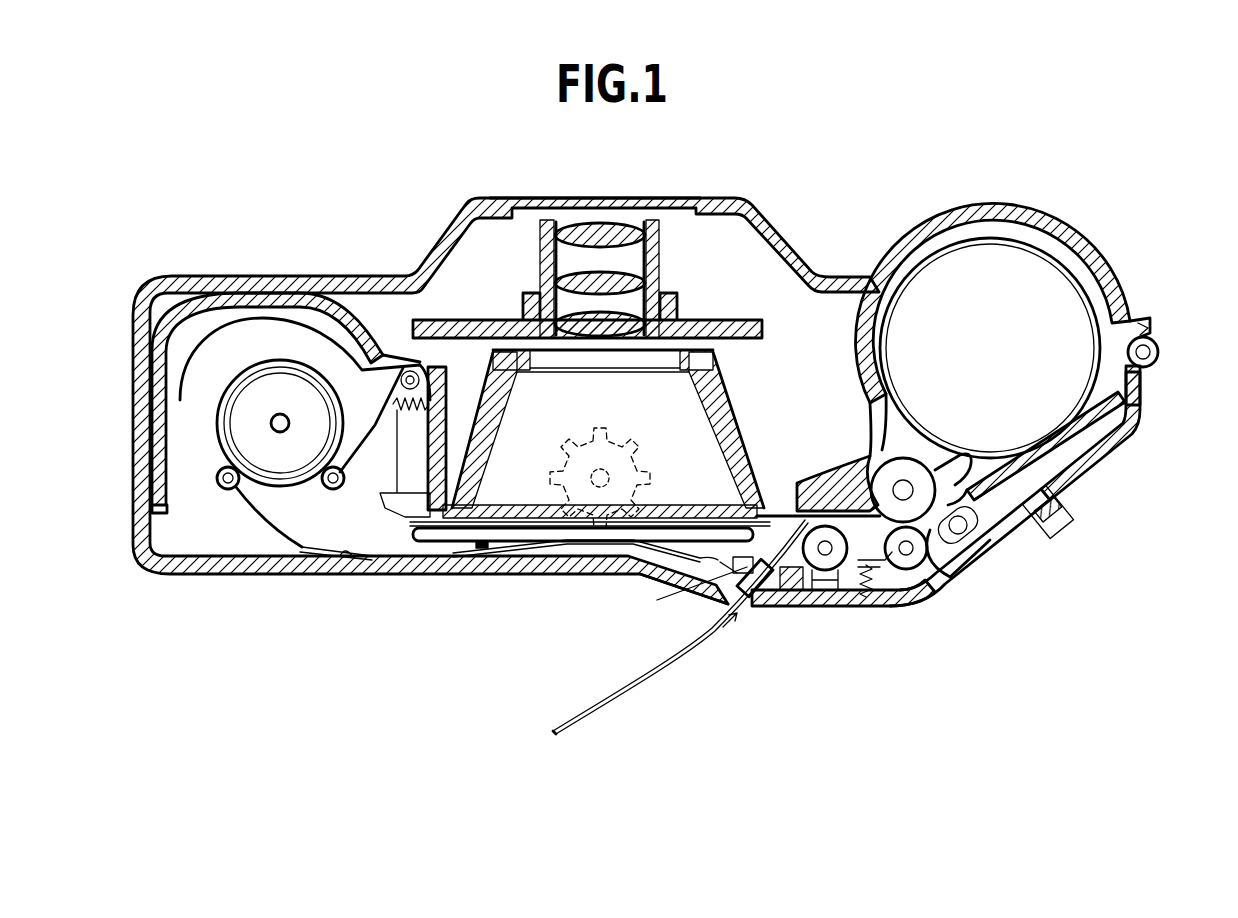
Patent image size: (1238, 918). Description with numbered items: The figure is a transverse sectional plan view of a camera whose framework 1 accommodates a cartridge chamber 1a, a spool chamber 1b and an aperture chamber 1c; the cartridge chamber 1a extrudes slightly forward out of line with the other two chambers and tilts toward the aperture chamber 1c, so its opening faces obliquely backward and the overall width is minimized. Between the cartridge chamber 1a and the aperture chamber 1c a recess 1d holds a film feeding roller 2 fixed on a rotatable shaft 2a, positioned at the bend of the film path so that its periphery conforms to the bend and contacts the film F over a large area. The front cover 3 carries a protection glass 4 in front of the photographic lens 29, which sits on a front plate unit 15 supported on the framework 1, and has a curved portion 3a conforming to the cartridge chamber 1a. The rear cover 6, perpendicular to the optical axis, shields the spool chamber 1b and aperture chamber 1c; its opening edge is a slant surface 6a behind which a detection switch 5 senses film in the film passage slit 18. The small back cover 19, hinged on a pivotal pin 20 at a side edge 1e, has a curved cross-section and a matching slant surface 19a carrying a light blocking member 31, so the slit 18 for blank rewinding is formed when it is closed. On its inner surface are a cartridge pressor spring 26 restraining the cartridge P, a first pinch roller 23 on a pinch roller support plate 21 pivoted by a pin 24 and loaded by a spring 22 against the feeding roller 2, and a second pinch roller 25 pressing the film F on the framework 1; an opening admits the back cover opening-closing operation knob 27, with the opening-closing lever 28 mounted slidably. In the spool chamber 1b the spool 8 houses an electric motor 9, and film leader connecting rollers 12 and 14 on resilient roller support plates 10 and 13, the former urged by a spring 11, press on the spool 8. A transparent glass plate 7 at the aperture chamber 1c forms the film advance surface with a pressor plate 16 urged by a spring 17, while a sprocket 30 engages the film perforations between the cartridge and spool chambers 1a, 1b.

The framework 1 is at (1070, 260).
The cartridge chamber 1a is at (1107, 336).
The spool chamber 1b is at (160, 370).
The aperture chamber 1c is at (690, 405).
The recess 1d is at (908, 466).
The side edge 1e is at (1142, 322).
The film feeding roller 2 is at (885, 488).
The shaft 2a is at (935, 498).
The front cover 3 is at (434, 252).
The curved portion 3a is at (975, 204).
The protection glass 4 is at (540, 204).
The detection switch 5 is at (710, 574).
The rear cover 6 is at (392, 566).
The slant surface 6a is at (702, 606).
The transparent glass plate 7 is at (503, 506).
The spool 8 is at (238, 436).
The electric motor 9 is at (240, 410).
The roller support resilient plate 10 is at (366, 462).
The spring 11 is at (412, 414).
The film leader connecting roller 12 is at (328, 489).
The roller support resilient plate 13 is at (286, 548).
The film leader connecting roller 14 is at (228, 490).
The front plate unit 15 is at (672, 312).
The pressor plate 16 is at (440, 542).
The spring 17 is at (547, 560).
The film passage slit 18 is at (723, 627).
The back cover 19 is at (1138, 424).
The slant surface 19a is at (780, 582).
The pivotal pin 20 is at (1160, 352).
The pinch roller support plate 21 is at (950, 562).
The spring 22 is at (885, 578).
The first pinch roller 23 is at (905, 578).
The pin 24 is at (975, 552).
The second pinch roller 25 is at (835, 578).
The cartridge pressor spring 26 is at (1112, 458).
The back cover opening-closing operation knob 27 is at (1062, 514).
The back cover opening-closing lever 28 is at (1044, 520).
The photographic lens 29 is at (628, 224).
The sprocket 30 is at (605, 458).
The light blocking member 31 is at (745, 596).
The cartridge P is at (1022, 262).
The film F is at (612, 722).